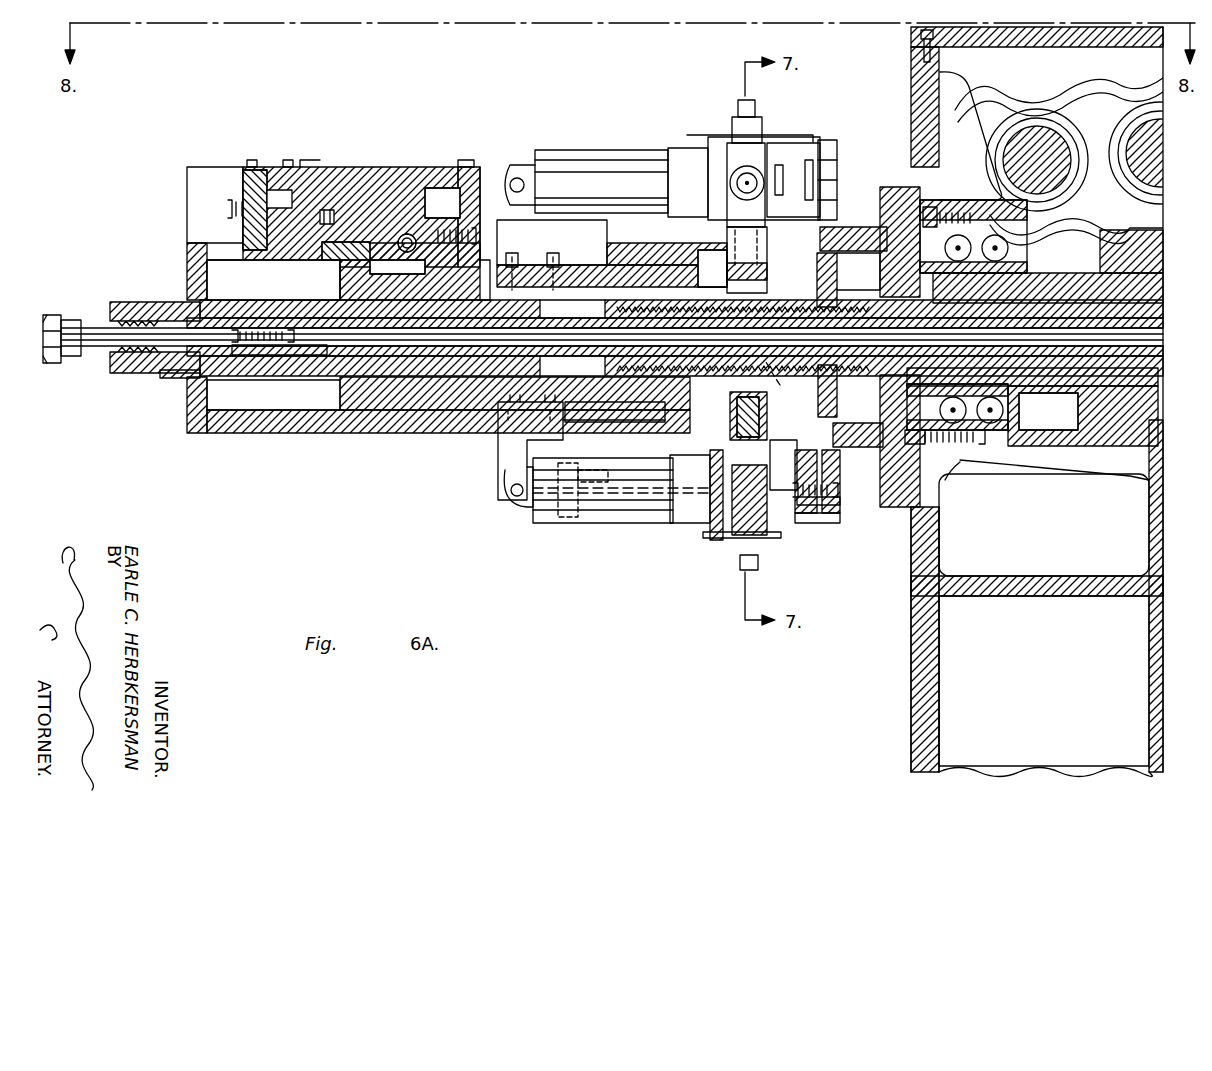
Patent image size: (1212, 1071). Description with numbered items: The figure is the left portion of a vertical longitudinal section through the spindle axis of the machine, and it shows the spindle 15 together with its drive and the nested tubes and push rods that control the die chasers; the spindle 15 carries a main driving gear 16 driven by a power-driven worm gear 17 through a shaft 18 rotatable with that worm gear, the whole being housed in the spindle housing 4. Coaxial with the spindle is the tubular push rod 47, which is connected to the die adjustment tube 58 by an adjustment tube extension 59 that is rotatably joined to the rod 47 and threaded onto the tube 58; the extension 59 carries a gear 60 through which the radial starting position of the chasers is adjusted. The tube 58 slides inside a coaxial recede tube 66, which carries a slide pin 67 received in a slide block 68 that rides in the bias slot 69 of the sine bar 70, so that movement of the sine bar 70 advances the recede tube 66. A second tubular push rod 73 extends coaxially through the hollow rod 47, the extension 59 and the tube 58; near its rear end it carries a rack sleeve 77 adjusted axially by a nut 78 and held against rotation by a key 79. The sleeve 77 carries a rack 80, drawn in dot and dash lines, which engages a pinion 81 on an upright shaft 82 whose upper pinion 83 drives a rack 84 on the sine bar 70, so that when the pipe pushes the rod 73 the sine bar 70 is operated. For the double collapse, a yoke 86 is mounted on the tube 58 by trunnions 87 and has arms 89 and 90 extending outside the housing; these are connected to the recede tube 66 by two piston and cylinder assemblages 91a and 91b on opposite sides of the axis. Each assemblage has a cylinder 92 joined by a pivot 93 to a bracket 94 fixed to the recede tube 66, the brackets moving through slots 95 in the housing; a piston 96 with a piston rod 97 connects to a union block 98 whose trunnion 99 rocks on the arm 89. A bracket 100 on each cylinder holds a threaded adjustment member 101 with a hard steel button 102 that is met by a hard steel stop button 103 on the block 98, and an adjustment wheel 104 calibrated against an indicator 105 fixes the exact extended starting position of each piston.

The housing 4 is at (911, 705).
The spindle 15 is at (1070, 410).
The main driving gear 16 is at (1140, 466).
The worm gear 17 is at (1150, 108).
The shaft 18 is at (1152, 152).
The tubular push rod 47 is at (885, 300).
The die adjustment tube 58 is at (610, 300).
The adjustment tube extension 59 is at (812, 300).
The gear 60 is at (837, 390).
The recede tube 66 is at (585, 270).
The slide pin 67 is at (340, 292).
The slide block 68 is at (400, 222).
The bias slot 69 is at (325, 262).
The sine bar 70 is at (413, 185).
The tubular push rod 73 is at (610, 357).
The rack sleeve 77 is at (158, 300).
The nut 78 is at (115, 371).
The key 79 is at (182, 378).
The rack 80 is at (300, 358).
The pinion 81 is at (290, 348).
The upright shaft 82 is at (200, 262).
The pinion 83 is at (228, 210).
The rack 84 is at (320, 175).
The yoke 86 is at (767, 275).
The trunnions 87 is at (770, 380).
The arm 89 is at (767, 409).
The arm 90 is at (767, 252).
The piston and cylinder assemblage 91a is at (600, 150).
The piston and cylinder assemblage 91b is at (655, 530).
The cylinder 92 is at (637, 525).
The pivot 93 is at (515, 500).
The bracket 94 is at (508, 442).
The slots 95 is at (590, 420).
The piston 96 is at (565, 520).
The piston rod 97 is at (612, 505).
The union block 98 is at (740, 567).
The trunnion 99 is at (740, 540).
The bracket 100 is at (780, 135).
The threaded adjustment member 101 is at (840, 470).
The hard steel button 102 is at (773, 470).
The hard steel stop button 103 is at (775, 495).
The adjustment wheel 104 is at (842, 510).
The indicator 105 is at (832, 140).